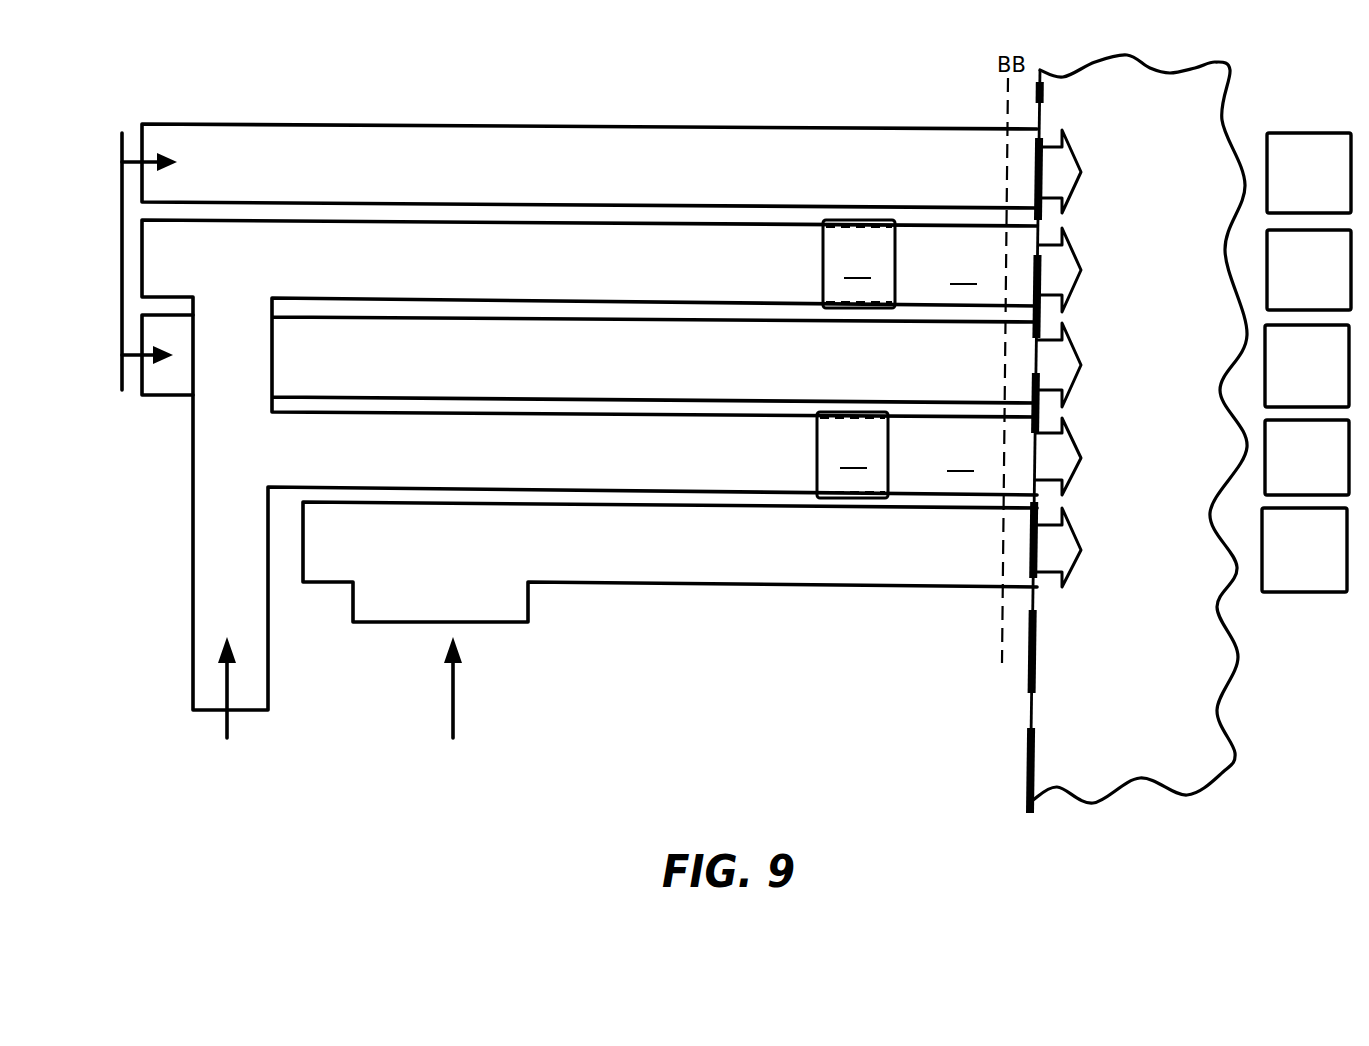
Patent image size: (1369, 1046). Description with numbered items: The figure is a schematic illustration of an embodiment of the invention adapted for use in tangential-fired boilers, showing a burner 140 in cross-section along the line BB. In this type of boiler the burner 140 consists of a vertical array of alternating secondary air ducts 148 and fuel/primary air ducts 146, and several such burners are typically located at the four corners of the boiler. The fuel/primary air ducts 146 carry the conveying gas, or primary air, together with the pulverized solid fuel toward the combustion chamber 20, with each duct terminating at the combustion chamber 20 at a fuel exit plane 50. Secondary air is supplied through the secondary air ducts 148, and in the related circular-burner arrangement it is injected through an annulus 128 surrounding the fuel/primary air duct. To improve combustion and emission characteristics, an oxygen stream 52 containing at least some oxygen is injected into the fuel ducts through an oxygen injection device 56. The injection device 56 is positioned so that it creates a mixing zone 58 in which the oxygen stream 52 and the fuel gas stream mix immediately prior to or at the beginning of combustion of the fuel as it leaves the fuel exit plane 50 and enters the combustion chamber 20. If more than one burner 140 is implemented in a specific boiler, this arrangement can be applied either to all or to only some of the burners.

The combustion chamber 20 is at (1148, 460).
The fuel exit plane 50 is at (1030, 787).
The oxygen stream 52 is at (867, 434).
The oxygen injection device 56 is at (856, 359).
The mixing zone 58 is at (963, 361).
The annulus 128 is at (454, 720).
The burner 140 is at (1315, 123).
The fuel/primary air ducts 146 is at (228, 727).
The secondary air ducts 148 is at (120, 272).